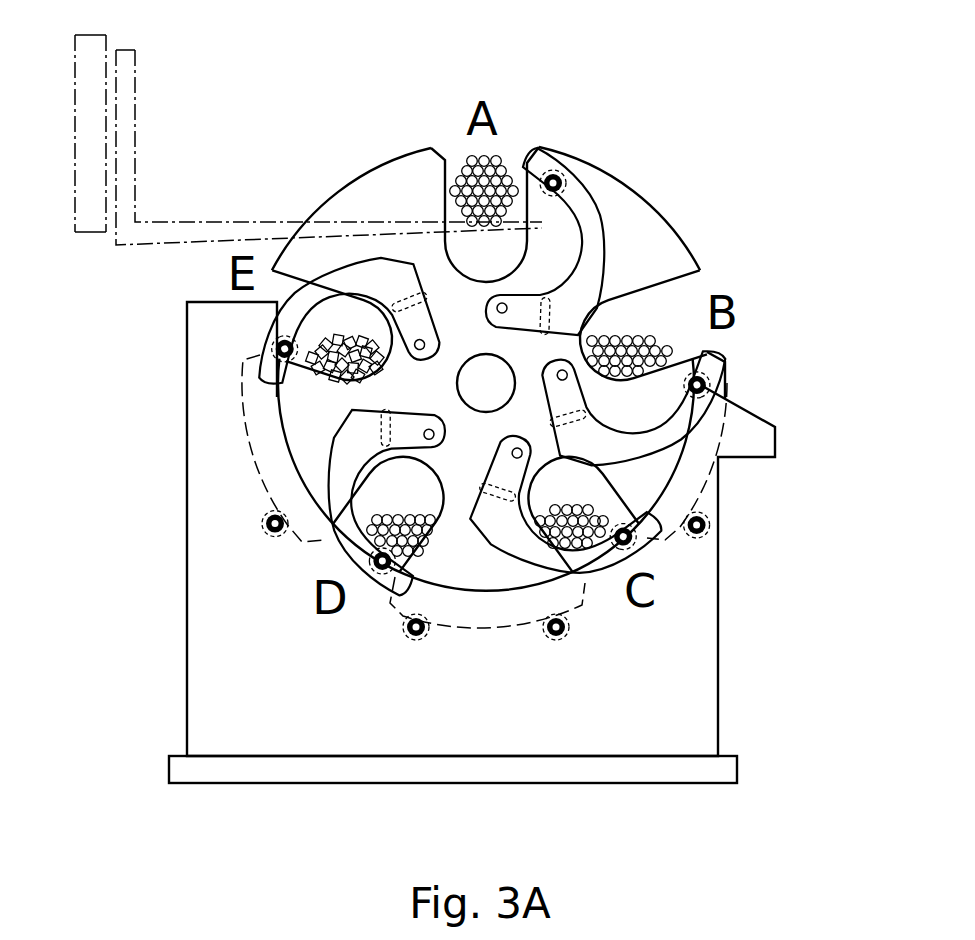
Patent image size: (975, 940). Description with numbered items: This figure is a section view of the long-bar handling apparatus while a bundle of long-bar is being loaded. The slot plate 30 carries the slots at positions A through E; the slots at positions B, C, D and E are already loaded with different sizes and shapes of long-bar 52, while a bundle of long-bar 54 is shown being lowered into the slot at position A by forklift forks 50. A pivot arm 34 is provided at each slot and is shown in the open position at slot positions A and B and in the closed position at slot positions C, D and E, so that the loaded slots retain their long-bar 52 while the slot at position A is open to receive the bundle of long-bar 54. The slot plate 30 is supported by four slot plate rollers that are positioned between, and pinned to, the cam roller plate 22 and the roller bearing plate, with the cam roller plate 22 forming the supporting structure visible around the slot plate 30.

The cam roller plate 22 is at (720, 613).
The slot plate 30 is at (393, 162).
The pivot arm 34 is at (598, 208).
The forklift forks 50 is at (269, 222).
The long-bar 52 is at (637, 333).
The bundle of long-bar 54 is at (502, 166).